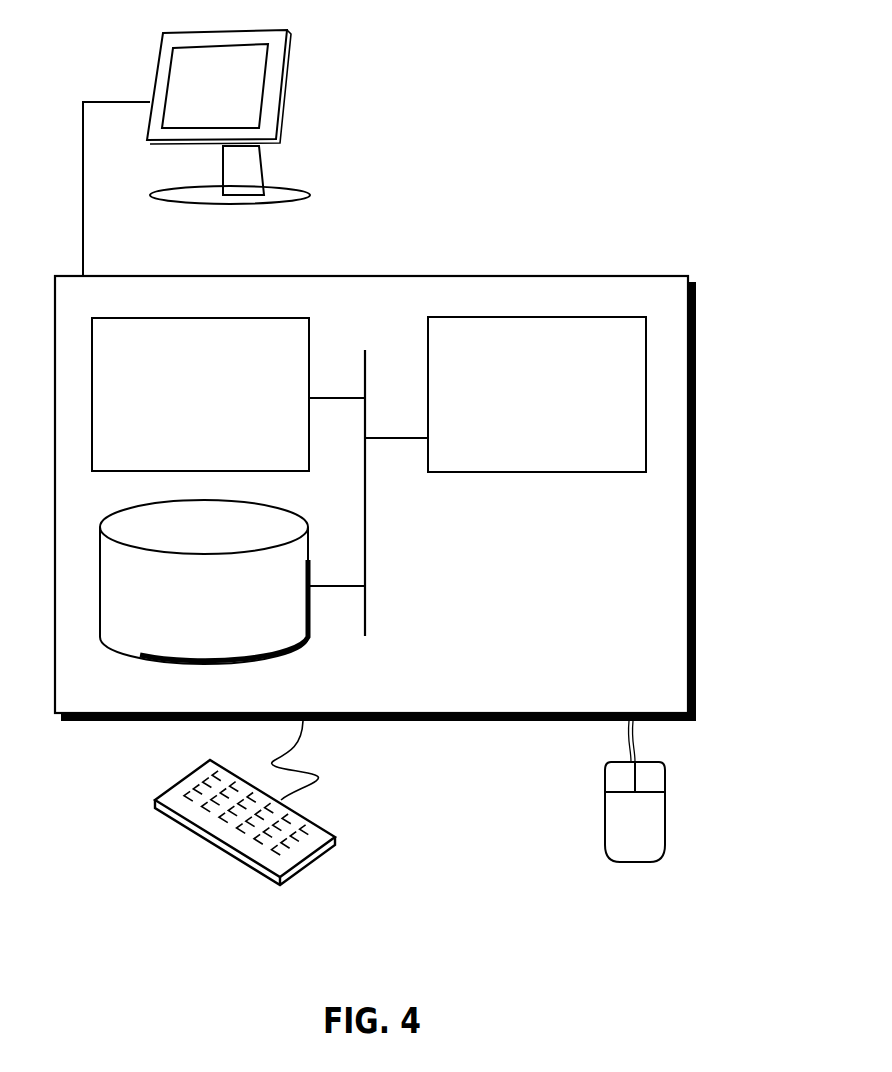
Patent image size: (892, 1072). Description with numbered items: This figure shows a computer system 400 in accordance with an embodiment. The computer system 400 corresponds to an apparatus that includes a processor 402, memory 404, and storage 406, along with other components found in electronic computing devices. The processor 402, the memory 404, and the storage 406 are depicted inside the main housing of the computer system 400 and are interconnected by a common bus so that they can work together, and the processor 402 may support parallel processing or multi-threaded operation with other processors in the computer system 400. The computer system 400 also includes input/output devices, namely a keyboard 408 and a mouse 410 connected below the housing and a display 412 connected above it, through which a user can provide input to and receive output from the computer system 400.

The computer system 400 is at (418, 258).
The processor 402 is at (537, 394).
The memory 404 is at (200, 394).
The storage 406 is at (204, 582).
The keyboard 408 is at (172, 822).
The mouse 410 is at (635, 791).
The display 412 is at (196, 153).